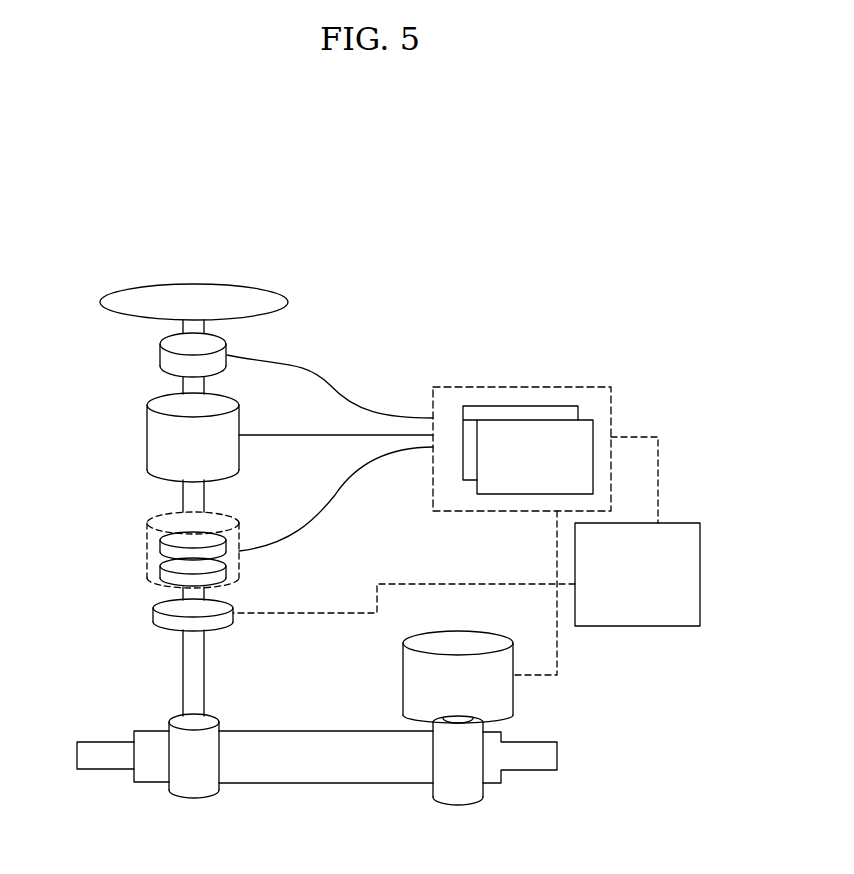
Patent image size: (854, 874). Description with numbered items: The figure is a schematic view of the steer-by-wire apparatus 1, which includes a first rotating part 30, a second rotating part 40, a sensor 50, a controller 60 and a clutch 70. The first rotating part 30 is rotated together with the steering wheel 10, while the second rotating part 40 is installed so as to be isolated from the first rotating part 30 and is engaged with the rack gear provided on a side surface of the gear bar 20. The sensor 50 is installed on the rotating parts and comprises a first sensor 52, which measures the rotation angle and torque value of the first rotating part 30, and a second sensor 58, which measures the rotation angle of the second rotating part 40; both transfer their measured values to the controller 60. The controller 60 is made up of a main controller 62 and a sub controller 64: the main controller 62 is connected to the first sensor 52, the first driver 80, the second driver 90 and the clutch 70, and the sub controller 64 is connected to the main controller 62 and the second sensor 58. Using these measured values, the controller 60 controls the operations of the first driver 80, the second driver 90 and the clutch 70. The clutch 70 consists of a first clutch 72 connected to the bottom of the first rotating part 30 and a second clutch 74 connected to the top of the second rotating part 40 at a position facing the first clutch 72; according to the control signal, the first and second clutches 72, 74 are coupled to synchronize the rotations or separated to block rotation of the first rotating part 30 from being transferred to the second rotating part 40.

The steer-by-wire apparatus 1 is at (495, 210).
The steering wheel 10 is at (250, 287).
The gear bar 20 is at (532, 771).
The first rotating part 30 is at (188, 388).
The second rotating part 40 is at (193, 665).
The sensor 50 is at (155, 350).
The first sensor 52 is at (170, 358).
The second sensor 58 is at (155, 617).
The controller 60 is at (602, 347).
The main controller 62 is at (523, 406).
The sub controller 64 is at (676, 523).
The clutch 70 is at (70, 537).
The first clutch 72 is at (168, 548).
The second clutch 74 is at (168, 578).
The first driver 80 is at (145, 438).
The second driver 90 is at (528, 697).